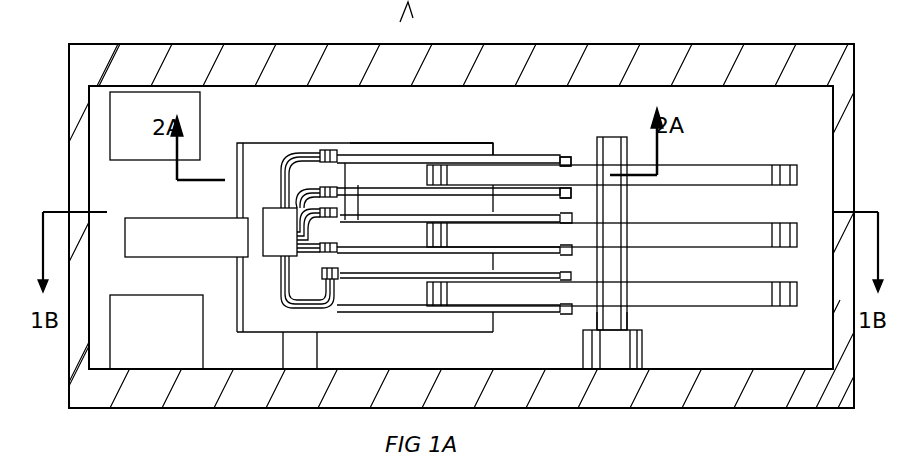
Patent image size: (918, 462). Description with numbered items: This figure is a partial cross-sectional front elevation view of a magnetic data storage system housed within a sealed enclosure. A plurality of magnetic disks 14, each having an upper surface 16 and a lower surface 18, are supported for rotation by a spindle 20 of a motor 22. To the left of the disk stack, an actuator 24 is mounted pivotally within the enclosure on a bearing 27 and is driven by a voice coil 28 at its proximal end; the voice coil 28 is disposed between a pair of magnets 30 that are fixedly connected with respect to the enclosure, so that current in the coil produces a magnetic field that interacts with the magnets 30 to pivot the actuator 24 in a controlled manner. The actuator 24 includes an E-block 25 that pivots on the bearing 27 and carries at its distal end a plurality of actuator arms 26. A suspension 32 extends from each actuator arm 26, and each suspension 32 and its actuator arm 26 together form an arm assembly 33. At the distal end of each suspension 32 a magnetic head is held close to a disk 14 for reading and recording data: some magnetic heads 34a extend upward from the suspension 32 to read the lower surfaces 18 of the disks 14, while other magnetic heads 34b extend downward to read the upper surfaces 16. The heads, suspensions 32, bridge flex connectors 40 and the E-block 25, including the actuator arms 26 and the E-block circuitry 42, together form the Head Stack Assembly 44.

The magnetic disk 14 is at (680, 168).
The upper surface 16 is at (758, 165).
The lower surface 18 is at (770, 188).
The spindle 20 is at (628, 308).
The motor 22 is at (642, 352).
The actuator 24 is at (352, 140).
The E-block 25 is at (268, 143).
The actuator arm 26 is at (466, 143).
The bearing 27 is at (317, 333).
The voice coil 28 is at (207, 230).
The magnet 30 is at (150, 161).
The suspension 32 is at (550, 155).
The arm assembly 33 is at (568, 334).
The magnetic head 34a is at (571, 196).
The magnetic head 34b is at (565, 157).
The bridge flex connector 40 is at (344, 218).
The E-block circuitry 42 is at (263, 268).
The Head Stack Assembly 44 is at (446, 130).